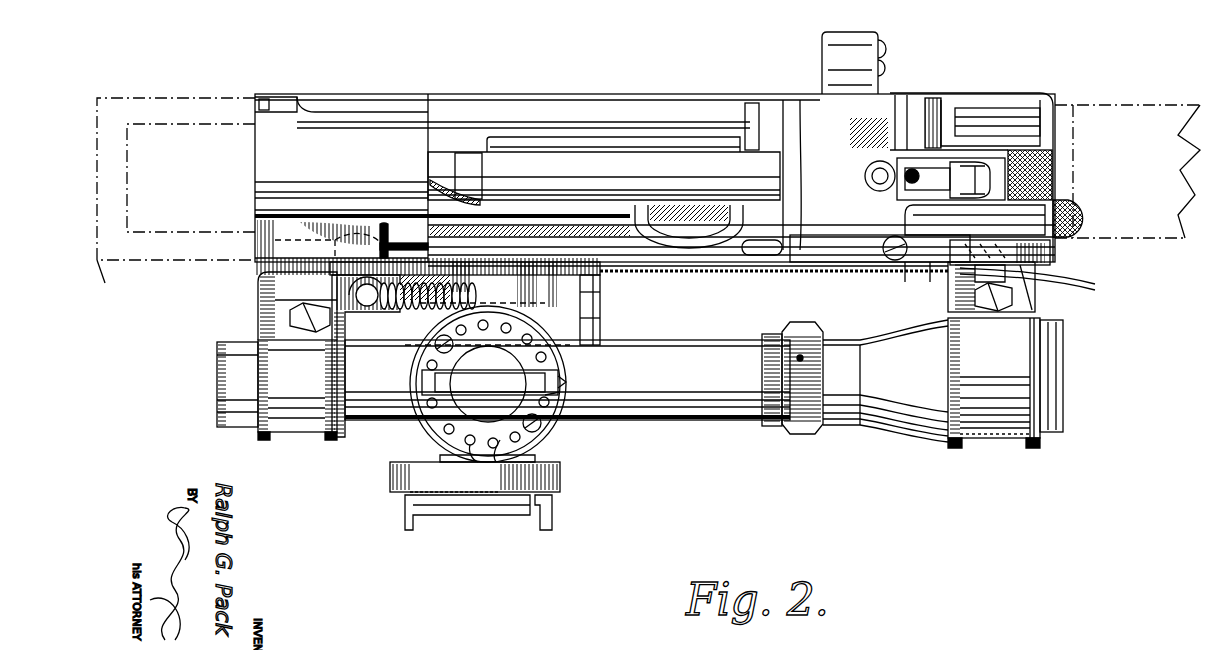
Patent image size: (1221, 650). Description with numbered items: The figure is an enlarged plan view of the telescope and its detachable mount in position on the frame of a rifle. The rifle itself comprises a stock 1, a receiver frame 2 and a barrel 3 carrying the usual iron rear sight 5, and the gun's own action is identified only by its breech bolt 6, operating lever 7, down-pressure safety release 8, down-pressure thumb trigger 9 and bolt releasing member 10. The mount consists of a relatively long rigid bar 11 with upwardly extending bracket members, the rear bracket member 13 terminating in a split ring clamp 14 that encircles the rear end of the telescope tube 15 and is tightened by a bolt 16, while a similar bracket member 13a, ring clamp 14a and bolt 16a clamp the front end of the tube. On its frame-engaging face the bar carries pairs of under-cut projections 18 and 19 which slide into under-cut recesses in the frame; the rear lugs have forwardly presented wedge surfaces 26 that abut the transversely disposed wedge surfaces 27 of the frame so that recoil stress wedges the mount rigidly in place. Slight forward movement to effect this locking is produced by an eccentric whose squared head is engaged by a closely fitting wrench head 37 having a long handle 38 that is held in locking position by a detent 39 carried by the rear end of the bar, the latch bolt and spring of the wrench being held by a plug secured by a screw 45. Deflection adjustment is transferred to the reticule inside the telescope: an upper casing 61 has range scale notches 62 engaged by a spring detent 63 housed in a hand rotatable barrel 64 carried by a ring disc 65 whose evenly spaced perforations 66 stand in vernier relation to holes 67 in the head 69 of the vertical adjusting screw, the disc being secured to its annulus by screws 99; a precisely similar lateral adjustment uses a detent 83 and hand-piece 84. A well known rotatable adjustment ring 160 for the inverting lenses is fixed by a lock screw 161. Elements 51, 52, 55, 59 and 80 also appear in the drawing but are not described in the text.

The stock 1 is at (1122, 105).
The receiver frame 2 is at (574, 115).
The barrel 3 is at (176, 195).
The rear sight 5 is at (985, 165).
The breech bolt 6 is at (604, 168).
The operating lever 7 is at (884, 55).
The down-pressure safety release 8 is at (1088, 215).
The down-pressure thumb trigger 9 is at (1055, 172).
The bolt releasing member 10 is at (856, 248).
The bar 11 is at (690, 268).
The bracket member 13 is at (1008, 296).
The bracket member 13a is at (270, 300).
The ring clamp 14 is at (943, 383).
The ring clamp 14a is at (277, 390).
The telescope tube 15 is at (567, 380).
The bolt 16 is at (993, 294).
The bolt 16a is at (265, 322).
The under-cut projection 18 is at (1058, 250).
The under-cut projection 19 is at (265, 232).
The wedge surface 26 is at (930, 268).
The wedge surface 27 is at (903, 268).
The wrench head 37 is at (590, 308).
The handle 38 is at (852, 268).
The detent 39 is at (1005, 275).
The screw 45 is at (602, 322).
The pivot pin 51 is at (366, 306).
The spring 52 is at (440, 310).
The pivot arm 55 is at (366, 300).
The mount plate 59 is at (500, 282).
The upper casing 61 is at (410, 368).
The notches 62 is at (562, 392).
The spring detent 63 is at (562, 383).
The hand rotatable barrel 64 is at (490, 382).
The ring disc 65 is at (452, 428).
The perforations 66 is at (475, 465).
The holes 67 is at (506, 334).
The head 69 is at (488, 384).
The knurled wheel 80 is at (475, 477).
The detent 83 is at (553, 505).
The hand-piece 84 is at (470, 510).
The screws 99 is at (548, 426).
The rotatable adjustment ring 160 is at (806, 437).
The lock screw 161 is at (773, 428).